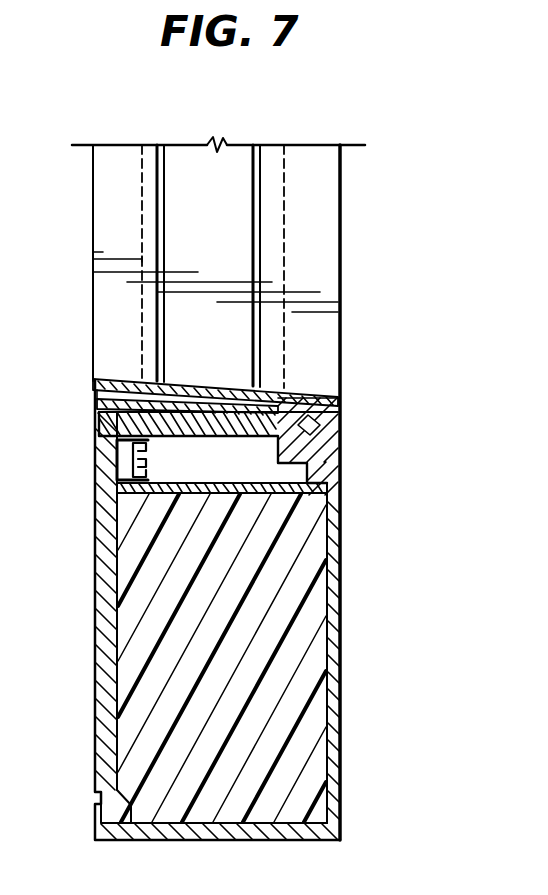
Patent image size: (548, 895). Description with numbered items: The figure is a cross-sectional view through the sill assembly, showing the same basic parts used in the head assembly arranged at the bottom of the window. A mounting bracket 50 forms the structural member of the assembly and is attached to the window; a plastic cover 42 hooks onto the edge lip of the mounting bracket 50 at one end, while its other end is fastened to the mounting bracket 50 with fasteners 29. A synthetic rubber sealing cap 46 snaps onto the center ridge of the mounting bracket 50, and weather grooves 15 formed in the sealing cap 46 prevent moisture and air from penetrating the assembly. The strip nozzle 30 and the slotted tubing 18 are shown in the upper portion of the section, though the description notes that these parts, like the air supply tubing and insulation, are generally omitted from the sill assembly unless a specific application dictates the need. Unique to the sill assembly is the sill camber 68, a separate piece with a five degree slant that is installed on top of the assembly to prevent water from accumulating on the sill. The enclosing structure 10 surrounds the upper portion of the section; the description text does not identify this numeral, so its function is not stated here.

The housing 10 is at (338, 322).
The strip nozzle 30 is at (222, 226).
The slotted tubing 18 is at (284, 192).
The sill camber 68 is at (93, 394).
The sealing cap 46 is at (340, 470).
The fasteners 29 is at (149, 472).
The weather grooves 15 is at (304, 500).
The mounting bracket 50 is at (95, 655).
The plastic cover 42 is at (343, 808).